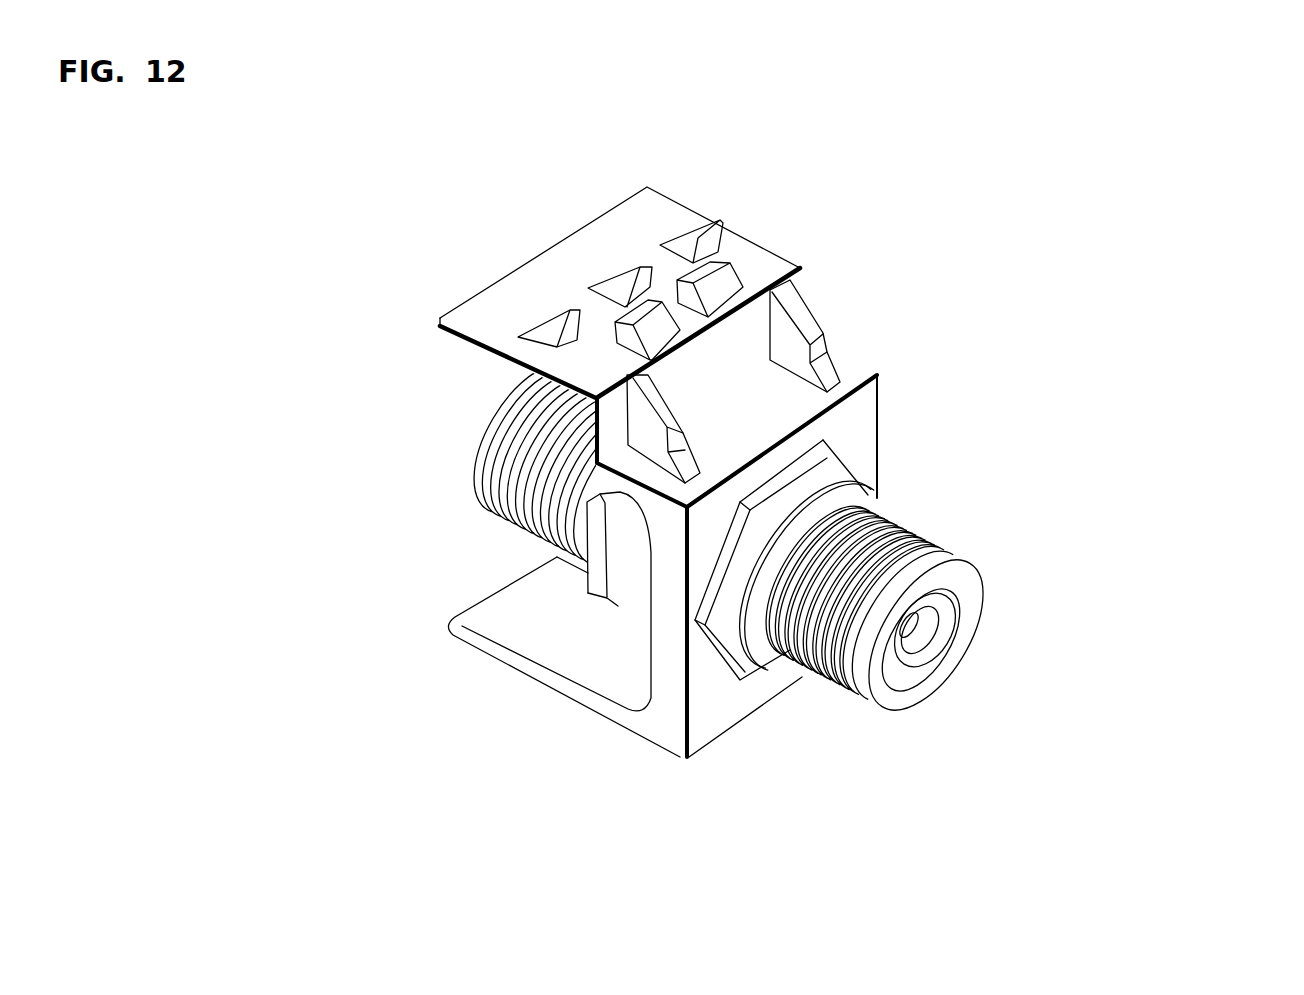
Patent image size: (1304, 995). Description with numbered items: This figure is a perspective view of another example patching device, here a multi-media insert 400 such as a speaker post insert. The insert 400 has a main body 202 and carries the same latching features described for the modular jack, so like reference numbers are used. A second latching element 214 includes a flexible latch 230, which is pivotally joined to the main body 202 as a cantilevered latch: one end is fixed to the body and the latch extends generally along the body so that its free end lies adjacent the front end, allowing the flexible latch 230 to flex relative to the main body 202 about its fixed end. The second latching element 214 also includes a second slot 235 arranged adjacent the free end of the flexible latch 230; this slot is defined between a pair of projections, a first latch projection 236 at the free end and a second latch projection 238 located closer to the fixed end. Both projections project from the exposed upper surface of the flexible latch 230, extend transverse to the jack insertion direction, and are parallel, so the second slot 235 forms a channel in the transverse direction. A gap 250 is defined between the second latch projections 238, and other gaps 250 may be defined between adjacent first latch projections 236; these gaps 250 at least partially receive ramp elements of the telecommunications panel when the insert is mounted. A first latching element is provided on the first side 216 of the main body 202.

The multi-media insert 400 is at (1100, 153).
The main body 202 is at (880, 381).
The second latching element 214 is at (803, 167).
The first side 216 is at (590, 735).
The flexible latch 230 is at (653, 202).
The second slot 235 is at (723, 305).
The first latch projection 236 is at (708, 220).
The second latch projection 238 is at (713, 290).
The gap 250 is at (665, 265).